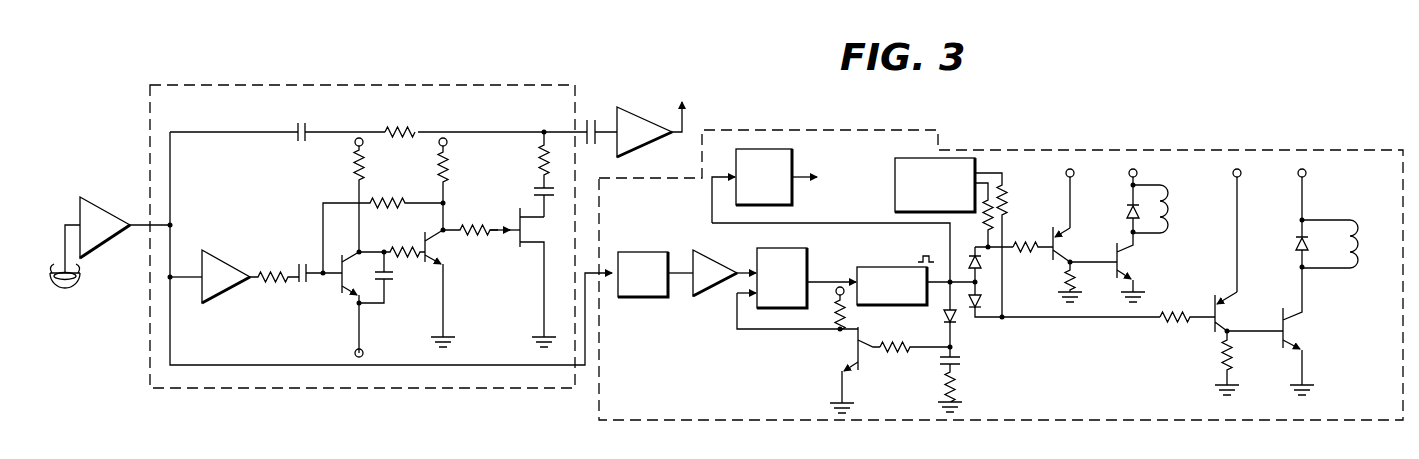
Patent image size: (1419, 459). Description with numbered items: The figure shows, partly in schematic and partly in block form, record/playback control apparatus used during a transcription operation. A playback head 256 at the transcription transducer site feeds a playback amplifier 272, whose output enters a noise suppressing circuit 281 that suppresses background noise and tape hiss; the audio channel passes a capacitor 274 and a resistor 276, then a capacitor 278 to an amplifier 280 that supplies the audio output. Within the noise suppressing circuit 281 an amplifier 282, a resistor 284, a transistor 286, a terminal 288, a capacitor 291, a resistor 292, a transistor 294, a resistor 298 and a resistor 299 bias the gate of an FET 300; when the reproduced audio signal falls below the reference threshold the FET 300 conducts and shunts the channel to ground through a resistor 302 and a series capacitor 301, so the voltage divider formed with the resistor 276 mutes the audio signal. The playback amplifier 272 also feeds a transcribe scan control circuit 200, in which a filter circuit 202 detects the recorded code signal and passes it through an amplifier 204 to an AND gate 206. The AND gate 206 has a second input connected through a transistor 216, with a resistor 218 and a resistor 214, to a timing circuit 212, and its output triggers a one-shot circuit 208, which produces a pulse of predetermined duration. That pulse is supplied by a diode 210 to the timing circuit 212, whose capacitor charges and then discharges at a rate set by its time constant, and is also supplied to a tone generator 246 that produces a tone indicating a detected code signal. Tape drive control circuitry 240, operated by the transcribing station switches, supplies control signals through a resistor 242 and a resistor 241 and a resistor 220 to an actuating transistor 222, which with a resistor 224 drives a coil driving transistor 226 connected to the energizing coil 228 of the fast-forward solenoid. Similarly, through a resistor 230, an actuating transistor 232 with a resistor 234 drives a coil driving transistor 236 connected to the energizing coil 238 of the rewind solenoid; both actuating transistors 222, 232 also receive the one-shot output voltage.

The transcribe scan control circuit 200 is at (802, 416).
The filter circuit 202 is at (657, 225).
The amplifier 204 is at (746, 239).
The AND gate 206 is at (807, 264).
The one-shot circuit 208 is at (908, 253).
The diode 210 is at (958, 321).
The timing circuit 212 is at (969, 363).
The resistor 214 is at (905, 353).
The transistor 216 is at (848, 345).
The resistor 218 is at (850, 320).
The resistor 220 is at (1036, 255).
The actuating transistor 222 is at (1058, 251).
The resistor 224 is at (1063, 293).
The coil driving transistor 226 is at (1127, 264).
The energizing coil 228 is at (1173, 223).
The resistor 230 is at (1183, 321).
The actuating transistor 232 is at (1222, 317).
The resistor 234 is at (1222, 356).
The coil driving transistor 236 is at (1292, 327).
The energizing coil 238 is at (1376, 209).
The tape drive control circuitry 240 is at (945, 158).
The resistor 241 is at (994, 229).
The resistor 242 is at (1006, 196).
The tone generator 246 is at (792, 153).
The playback head 256 is at (55, 284).
The playback amplifier 272 is at (100, 207).
The capacitor 274 is at (307, 124).
The resistor 276 is at (430, 108).
The capacitor 278 is at (594, 118).
The amplifier 280 is at (640, 115).
The noise suppressing circuit 281 is at (276, 107).
The amplifier 282 is at (223, 262).
The resistor 284 is at (266, 282).
The transistor 286 is at (345, 284).
The terminal 288 is at (355, 353).
The capacitor 291 is at (396, 277).
The resistor 292 is at (407, 231).
The transistor 294 is at (440, 247).
The resistor 298 is at (393, 198).
The resistor 299 is at (477, 226).
The FET 300 is at (532, 231).
The capacitor 301 is at (534, 189).
The resistor 302 is at (541, 157).